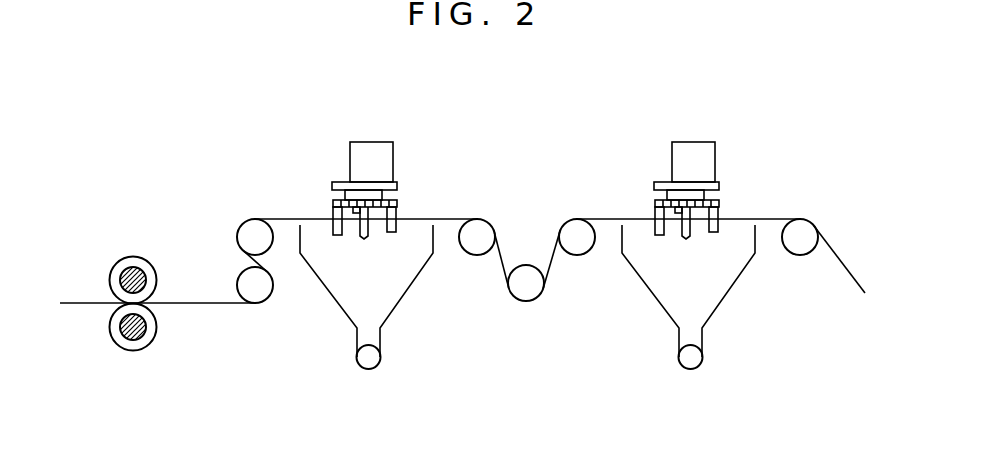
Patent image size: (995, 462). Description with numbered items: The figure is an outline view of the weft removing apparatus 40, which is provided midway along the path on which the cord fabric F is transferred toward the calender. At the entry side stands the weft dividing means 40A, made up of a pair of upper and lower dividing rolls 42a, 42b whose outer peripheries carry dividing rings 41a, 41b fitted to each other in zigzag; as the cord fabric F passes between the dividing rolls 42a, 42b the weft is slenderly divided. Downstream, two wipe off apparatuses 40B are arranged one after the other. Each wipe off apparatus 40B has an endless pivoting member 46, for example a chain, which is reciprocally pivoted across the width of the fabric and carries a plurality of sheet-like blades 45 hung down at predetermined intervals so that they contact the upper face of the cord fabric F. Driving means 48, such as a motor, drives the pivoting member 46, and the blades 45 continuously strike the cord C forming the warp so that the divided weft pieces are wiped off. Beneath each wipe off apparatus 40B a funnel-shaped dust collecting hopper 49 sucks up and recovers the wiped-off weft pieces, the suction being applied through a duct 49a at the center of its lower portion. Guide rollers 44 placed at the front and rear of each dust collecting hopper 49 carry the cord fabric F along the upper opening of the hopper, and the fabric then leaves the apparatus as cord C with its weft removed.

The weft removing apparatus 40 is at (732, 61).
The weft dividing means 40A is at (133, 239).
The wipe off apparatus 40B is at (345, 133).
The dividing ring 41a is at (118, 268).
The dividing ring 41b is at (128, 340).
The upper dividing roll 42a is at (140, 275).
The lower dividing roll 42b is at (142, 327).
The guide roller 44 is at (253, 225).
The blade 45 is at (363, 236).
The pivoting member 46 is at (398, 200).
The driving means 48 is at (375, 150).
The dust collecting hopper 49 is at (402, 302).
The duct 49a is at (370, 362).
The cord fabric F is at (80, 306).
The cord C is at (840, 258).